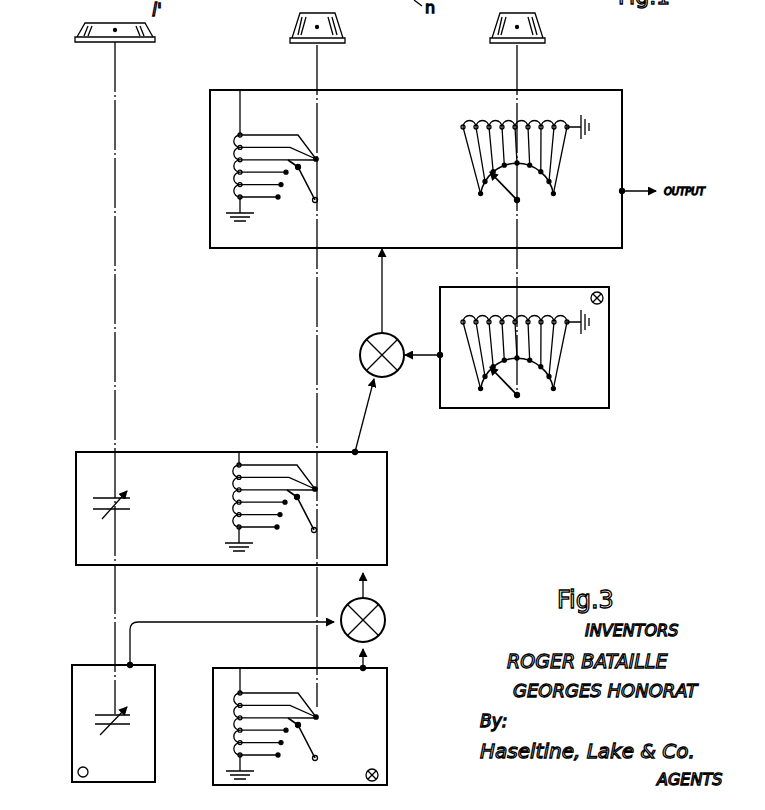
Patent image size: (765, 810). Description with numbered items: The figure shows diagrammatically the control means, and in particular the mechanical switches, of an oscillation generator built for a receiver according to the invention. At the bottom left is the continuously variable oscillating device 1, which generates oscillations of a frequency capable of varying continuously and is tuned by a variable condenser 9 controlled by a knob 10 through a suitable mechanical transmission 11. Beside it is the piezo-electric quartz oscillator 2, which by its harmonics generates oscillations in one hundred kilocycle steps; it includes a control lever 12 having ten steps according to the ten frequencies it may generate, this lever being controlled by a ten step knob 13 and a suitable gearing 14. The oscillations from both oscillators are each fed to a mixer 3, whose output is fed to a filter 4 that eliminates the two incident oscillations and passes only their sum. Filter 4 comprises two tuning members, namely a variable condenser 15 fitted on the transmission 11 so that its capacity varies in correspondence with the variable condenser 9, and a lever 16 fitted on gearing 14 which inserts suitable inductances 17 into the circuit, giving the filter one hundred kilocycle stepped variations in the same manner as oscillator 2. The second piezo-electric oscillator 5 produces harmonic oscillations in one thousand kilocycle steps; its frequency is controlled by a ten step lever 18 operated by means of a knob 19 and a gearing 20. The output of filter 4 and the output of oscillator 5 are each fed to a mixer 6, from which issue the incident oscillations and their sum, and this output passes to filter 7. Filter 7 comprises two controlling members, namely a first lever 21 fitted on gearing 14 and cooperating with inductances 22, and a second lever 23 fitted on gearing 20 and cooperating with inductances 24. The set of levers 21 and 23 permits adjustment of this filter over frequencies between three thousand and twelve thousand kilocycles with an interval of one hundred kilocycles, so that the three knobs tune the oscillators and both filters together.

The oscillating device 1 is at (68, 768).
The piezoelectric quartz oscillator 2 is at (372, 755).
The mixer 3 is at (378, 623).
The filter 4 is at (378, 524).
The second piezo-electric oscillator 5 is at (562, 405).
The mixer 6 is at (370, 345).
The filter 7 is at (416, 169).
The variable condenser 9 is at (112, 716).
The knob 10 is at (113, 28).
The mechanical transmission 11 is at (118, 73).
The control lever 12 is at (304, 730).
The ten step knob 13 is at (320, 26).
The gearing 14 is at (334, 376).
The variable condenser 15 is at (122, 504).
The lever 16 is at (304, 516).
The inductances 17 is at (236, 499).
The ten step lever 18 is at (506, 393).
The knob 19 is at (518, 26).
The gearing 20 is at (534, 220).
The first lever 21 is at (300, 190).
The inductances 22 is at (235, 141).
The second lever 23 is at (504, 192).
The inductances 24 is at (504, 155).